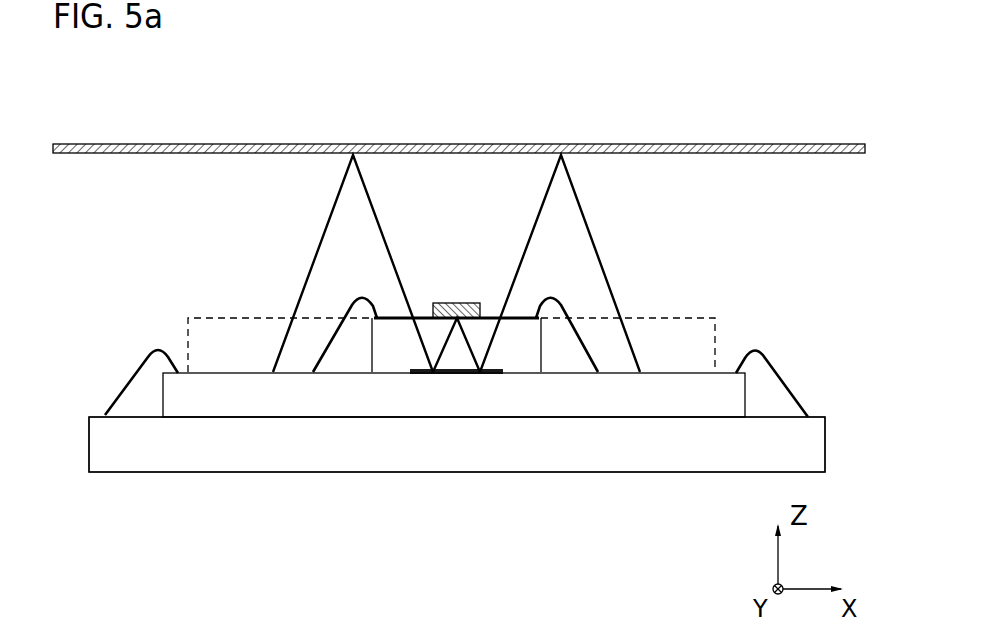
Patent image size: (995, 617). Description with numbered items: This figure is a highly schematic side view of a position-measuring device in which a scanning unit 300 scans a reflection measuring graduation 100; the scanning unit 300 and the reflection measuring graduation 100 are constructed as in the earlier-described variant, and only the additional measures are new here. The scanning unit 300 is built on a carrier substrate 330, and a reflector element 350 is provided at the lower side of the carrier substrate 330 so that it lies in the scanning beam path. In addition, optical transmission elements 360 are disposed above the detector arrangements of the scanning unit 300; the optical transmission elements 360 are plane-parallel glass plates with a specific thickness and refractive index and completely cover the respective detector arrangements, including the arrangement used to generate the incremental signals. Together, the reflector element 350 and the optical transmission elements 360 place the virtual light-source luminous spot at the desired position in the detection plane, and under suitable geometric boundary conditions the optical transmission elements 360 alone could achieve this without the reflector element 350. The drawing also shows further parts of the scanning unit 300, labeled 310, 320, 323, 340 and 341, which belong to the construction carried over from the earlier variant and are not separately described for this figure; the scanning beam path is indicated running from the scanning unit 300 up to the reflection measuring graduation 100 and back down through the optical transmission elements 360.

The reflection measuring graduation 100 is at (108, 180).
The scanning unit 300 is at (113, 488).
The base substrate 310 is at (347, 442).
The circuit board 320 is at (248, 398).
The outer bond wires / contacts 323 is at (132, 378).
The carrier substrate 330 is at (517, 330).
The LED chip 340 is at (452, 302).
The bond wires 341 is at (327, 338).
The reflector element 350 is at (457, 375).
The optical transmission elements 360 is at (677, 348).